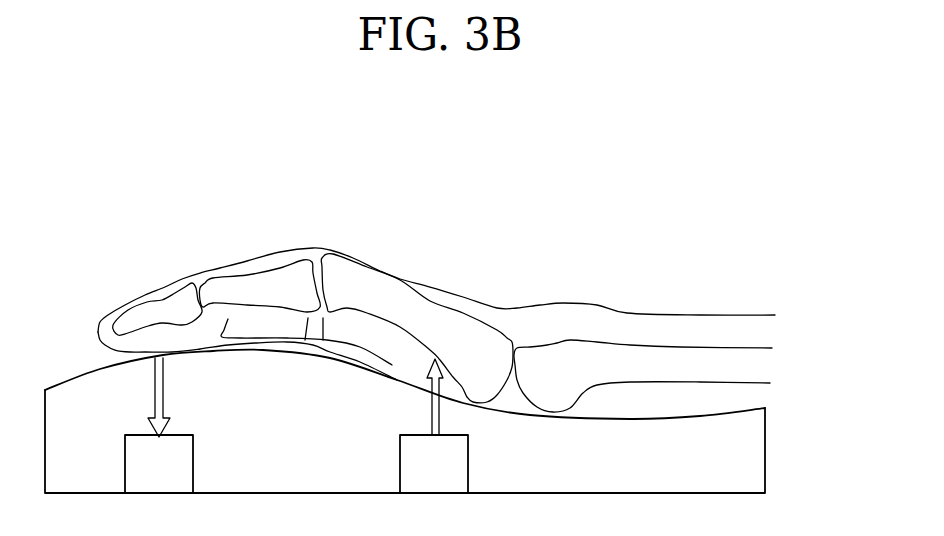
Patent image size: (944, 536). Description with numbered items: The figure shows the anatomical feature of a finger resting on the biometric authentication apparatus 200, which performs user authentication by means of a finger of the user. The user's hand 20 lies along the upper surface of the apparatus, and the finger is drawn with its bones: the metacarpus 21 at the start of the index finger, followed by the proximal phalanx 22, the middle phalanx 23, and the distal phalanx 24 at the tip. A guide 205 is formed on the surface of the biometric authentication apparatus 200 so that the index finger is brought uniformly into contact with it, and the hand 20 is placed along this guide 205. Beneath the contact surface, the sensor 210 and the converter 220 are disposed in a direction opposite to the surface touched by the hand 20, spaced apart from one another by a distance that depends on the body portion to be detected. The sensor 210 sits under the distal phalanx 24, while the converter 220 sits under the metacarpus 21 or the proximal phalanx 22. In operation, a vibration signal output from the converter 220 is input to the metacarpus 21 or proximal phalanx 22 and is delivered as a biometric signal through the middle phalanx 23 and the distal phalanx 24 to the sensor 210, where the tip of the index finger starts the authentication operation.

The hand 20 is at (695, 314).
The metacarpus 21 is at (558, 358).
The proximal phalanx 22 is at (373, 295).
The middle phalanx 23 is at (252, 288).
The distal phalanx 24 is at (147, 318).
The biometric authentication apparatus 200 is at (758, 448).
The guide 205 is at (747, 408).
The sensor 210 is at (159, 425).
The converter 220 is at (434, 426).